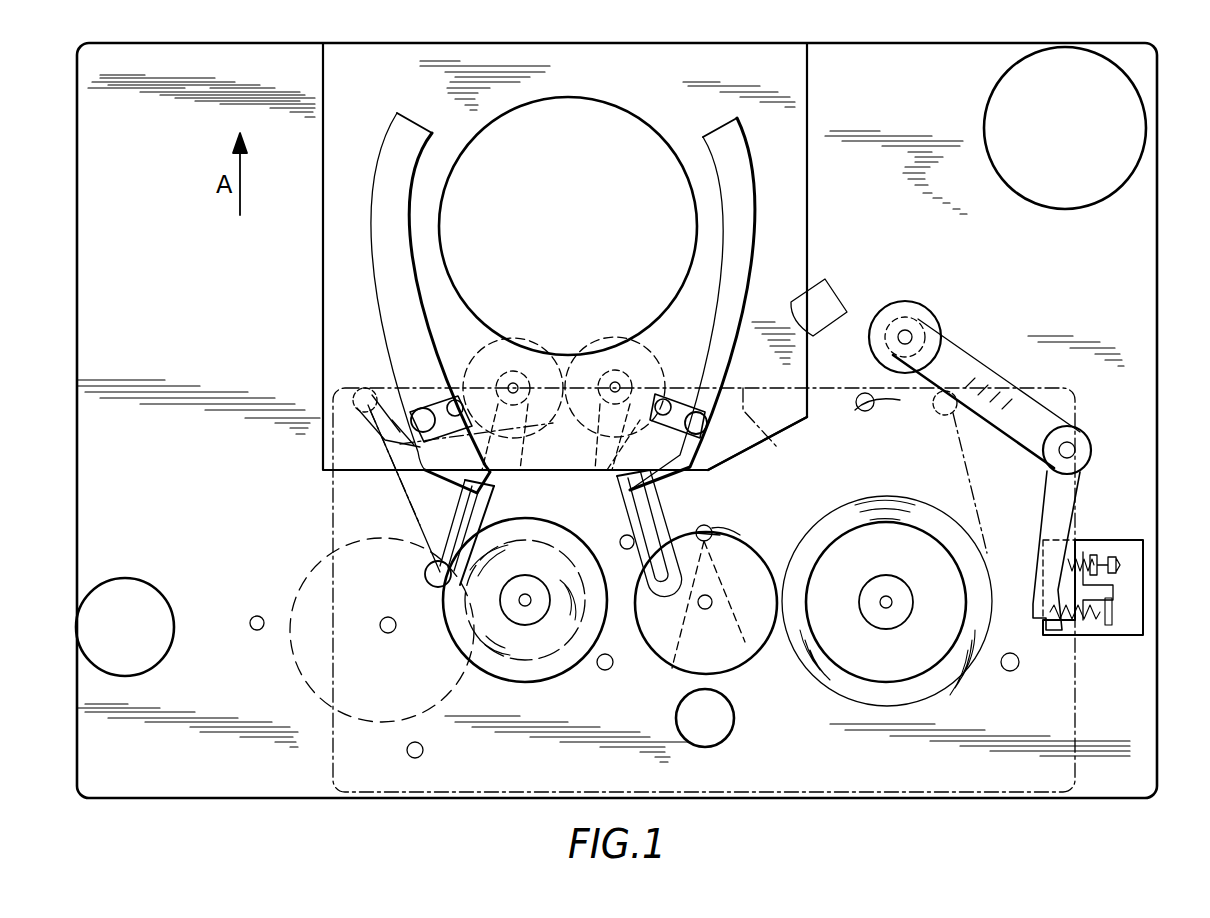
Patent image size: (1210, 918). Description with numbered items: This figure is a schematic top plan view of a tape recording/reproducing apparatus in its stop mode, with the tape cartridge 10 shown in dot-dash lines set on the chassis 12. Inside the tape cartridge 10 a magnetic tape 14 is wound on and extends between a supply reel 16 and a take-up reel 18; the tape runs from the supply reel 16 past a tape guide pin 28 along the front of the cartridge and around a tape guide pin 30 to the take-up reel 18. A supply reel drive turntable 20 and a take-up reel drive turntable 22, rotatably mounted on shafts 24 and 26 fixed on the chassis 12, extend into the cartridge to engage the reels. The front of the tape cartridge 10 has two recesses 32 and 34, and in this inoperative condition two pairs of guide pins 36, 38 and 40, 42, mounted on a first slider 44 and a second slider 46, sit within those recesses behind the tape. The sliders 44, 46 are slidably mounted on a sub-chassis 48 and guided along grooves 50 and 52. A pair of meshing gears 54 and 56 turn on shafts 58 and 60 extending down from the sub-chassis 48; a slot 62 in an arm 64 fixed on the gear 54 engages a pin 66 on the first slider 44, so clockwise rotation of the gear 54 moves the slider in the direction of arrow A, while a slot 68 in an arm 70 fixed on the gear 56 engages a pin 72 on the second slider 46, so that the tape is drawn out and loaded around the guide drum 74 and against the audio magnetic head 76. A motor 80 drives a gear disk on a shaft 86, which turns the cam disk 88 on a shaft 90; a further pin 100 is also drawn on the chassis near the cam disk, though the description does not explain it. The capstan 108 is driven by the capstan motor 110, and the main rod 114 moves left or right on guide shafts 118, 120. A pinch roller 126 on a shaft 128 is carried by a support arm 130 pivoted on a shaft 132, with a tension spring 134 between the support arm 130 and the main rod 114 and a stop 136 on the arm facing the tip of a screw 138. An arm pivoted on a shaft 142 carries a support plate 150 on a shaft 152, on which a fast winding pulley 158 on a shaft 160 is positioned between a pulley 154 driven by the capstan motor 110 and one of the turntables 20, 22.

The tape cartridge 10 is at (335, 490).
The chassis 12 is at (88, 740).
The magnetic tape 14 is at (410, 528).
The supply reel 16 is at (520, 622).
The take-up reel 18 is at (884, 620).
The supply reel drive turntable 20 is at (548, 530).
The take-up reel drive turntable 22 is at (860, 535).
The shaft 24 is at (530, 594).
The shaft 26 is at (892, 596).
The tape guide pin 28 is at (373, 392).
The tape guide pin 30 is at (940, 414).
The recess 32 is at (385, 440).
The recess 34 is at (762, 430).
The guide pin 36 is at (423, 408).
The guide pin 38 is at (452, 399).
The guide pin 40 is at (660, 402).
The guide pin 42 is at (697, 410).
The first slider 44 is at (452, 475).
The second slider 46 is at (720, 462).
The sub-chassis 48 is at (335, 258).
The groove 50 is at (385, 165).
The groove 52 is at (745, 160).
The gear 54 is at (530, 345).
The gear 56 is at (592, 348).
The shaft 58 is at (528, 367).
The shaft 60 is at (610, 384).
The slot 62 is at (480, 497).
The arm 64 is at (426, 566).
The pin 66 is at (503, 468).
The slot 68 is at (658, 498).
The arm 70 is at (652, 521).
The pin 72 is at (618, 470).
The guide drum 74 is at (615, 118).
The audio magnetic head 76 is at (828, 290).
The motor 80 is at (130, 558).
The shaft 86 is at (250, 627).
The cam disk 88 is at (292, 608).
The shaft 90 is at (385, 633).
The pin 100 is at (423, 752).
The capstan 108 is at (856, 410).
The capstan motor 110 is at (1074, 202).
The main rod 114 is at (1082, 550).
The guide shaft 118 is at (1006, 670).
The guide shaft 120 is at (604, 672).
The pinch roller 126 is at (890, 315).
The shaft 128 is at (910, 334).
The support arm 130 is at (958, 368).
The shaft 132 is at (1072, 446).
The tension spring 134 is at (1100, 620).
The stop 136 is at (1068, 565).
The screw 138 is at (1118, 565).
The shaft 142 is at (620, 542).
The support plate 150 is at (704, 525).
The shaft 152 is at (720, 534).
The pulley 154 is at (710, 740).
The fast winding pulley 158 is at (698, 668).
The shaft 160 is at (712, 610).